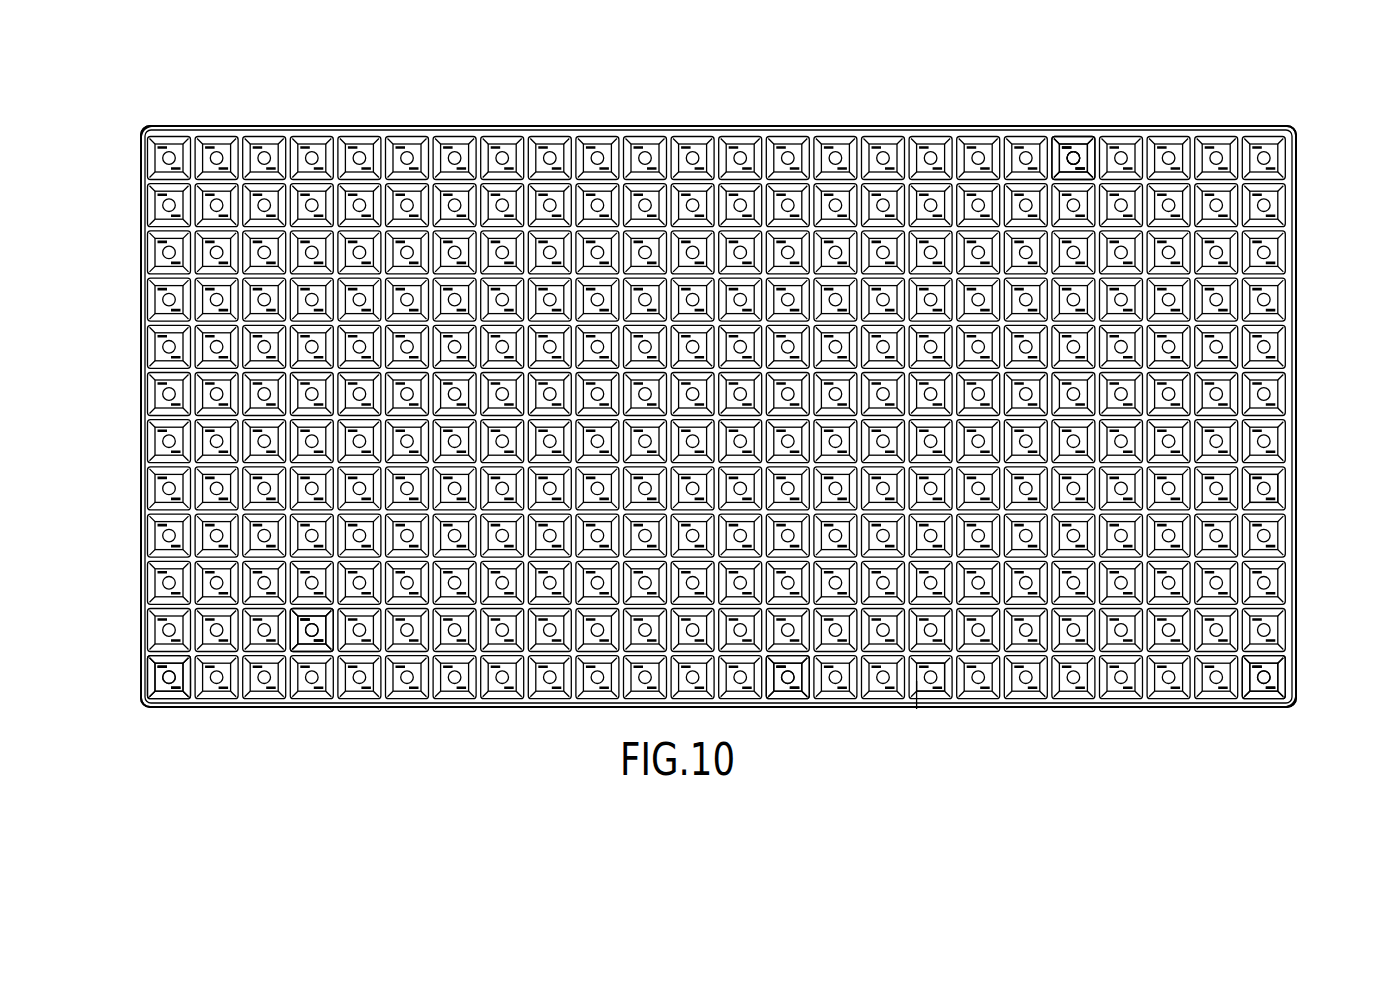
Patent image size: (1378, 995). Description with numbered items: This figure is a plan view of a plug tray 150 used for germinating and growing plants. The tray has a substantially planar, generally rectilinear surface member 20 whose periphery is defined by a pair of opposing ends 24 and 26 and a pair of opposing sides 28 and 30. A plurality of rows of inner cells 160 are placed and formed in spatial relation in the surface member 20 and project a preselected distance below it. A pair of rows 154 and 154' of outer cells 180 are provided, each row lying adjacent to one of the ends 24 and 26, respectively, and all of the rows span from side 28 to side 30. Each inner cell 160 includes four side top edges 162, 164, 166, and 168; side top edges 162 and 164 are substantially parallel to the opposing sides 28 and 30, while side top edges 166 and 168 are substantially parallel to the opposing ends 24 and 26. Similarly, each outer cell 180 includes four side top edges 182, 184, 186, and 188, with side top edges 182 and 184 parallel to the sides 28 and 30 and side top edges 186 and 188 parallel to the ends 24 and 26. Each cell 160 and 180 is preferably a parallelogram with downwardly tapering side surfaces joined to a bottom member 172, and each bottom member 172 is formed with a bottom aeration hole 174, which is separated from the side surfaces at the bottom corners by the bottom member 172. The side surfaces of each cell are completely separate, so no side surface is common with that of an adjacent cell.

The surface member 20 is at (570, 684).
The end 24 is at (142, 330).
The end 26 is at (1290, 377).
The side 28 is at (693, 132).
The side 30 is at (440, 708).
The plug tray 150 is at (494, 96).
The row of outer cells 154 is at (201, 96).
The row of outer cells 154' is at (1243, 739).
The inner cell 160 is at (313, 632).
The side top edge 162 is at (933, 695).
The side top edge 164 is at (935, 656).
The side top edge 166 is at (913, 673).
The side top edge 168 is at (952, 670).
The bottom member 172 is at (1080, 162).
The bottom aeration hole 174 is at (1068, 142).
The outer cell 180 is at (163, 688).
The side top edge 182 is at (1263, 502).
The side top edge 184 is at (1267, 465).
The side top edge 186 is at (1245, 488).
The side top edge 188 is at (1280, 480).